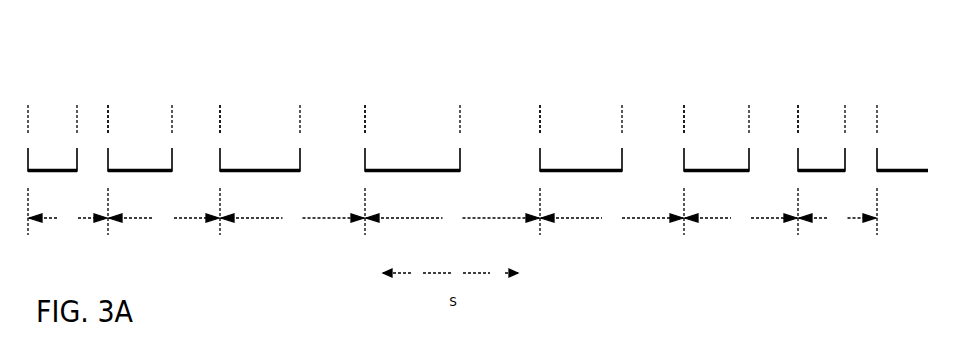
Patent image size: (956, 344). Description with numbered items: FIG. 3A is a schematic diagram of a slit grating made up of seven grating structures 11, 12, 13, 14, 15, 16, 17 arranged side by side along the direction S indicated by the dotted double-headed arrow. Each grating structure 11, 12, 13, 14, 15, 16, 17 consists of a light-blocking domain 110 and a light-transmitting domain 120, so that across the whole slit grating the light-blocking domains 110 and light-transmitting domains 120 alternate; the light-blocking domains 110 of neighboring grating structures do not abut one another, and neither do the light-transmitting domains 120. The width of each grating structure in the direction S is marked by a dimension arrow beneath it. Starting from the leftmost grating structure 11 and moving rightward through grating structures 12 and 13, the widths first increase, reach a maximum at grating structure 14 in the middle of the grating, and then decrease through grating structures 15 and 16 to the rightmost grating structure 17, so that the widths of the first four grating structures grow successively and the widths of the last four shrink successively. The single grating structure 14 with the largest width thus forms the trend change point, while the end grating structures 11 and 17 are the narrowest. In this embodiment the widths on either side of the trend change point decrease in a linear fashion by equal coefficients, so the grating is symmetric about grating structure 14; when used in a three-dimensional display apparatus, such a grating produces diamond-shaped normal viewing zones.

The grating structure 11 is at (101, 63).
The grating structure 12 is at (130, 63).
The grating structure 13 is at (253, 63).
The grating structure 14 is at (512, 63).
The grating structure 15 is at (570, 63).
The grating structure 16 is at (782, 63).
The grating structure 17 is at (870, 63).
The light-blocking domain 110 is at (77, 100).
The light-transmitting domain 120 is at (108, 100).